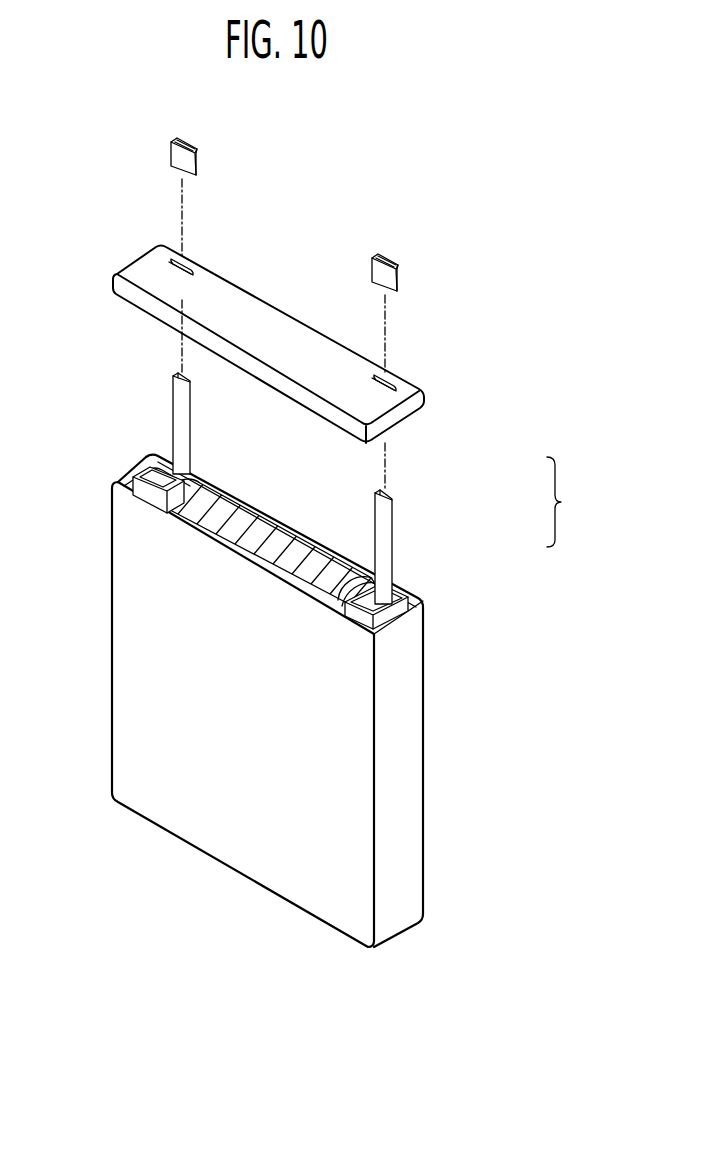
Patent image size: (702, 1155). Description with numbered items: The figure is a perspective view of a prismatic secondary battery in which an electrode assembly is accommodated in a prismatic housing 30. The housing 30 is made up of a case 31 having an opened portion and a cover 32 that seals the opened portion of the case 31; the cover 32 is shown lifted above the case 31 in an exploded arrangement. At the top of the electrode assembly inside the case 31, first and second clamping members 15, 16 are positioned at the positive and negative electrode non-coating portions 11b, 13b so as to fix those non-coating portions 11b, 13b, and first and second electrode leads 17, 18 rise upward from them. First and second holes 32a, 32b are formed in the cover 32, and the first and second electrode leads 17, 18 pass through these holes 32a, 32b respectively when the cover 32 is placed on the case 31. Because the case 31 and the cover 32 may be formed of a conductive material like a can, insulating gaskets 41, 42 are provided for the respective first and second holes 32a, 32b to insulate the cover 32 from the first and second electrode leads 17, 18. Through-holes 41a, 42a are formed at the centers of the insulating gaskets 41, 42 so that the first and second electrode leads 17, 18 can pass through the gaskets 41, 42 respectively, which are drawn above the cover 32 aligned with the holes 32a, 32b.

The positive electrode non-coating portion 11b is at (131, 480).
The negative electrode non-coating portion 13b is at (369, 597).
The first clamping member 15 is at (132, 495).
The second clamping member 16 is at (358, 620).
The first electrode lead 17 is at (176, 415).
The second electrode lead 18 is at (386, 537).
The prismatic housing 30 is at (566, 502).
The case 31 is at (417, 632).
The cover 32 is at (418, 410).
The first hole 32a is at (188, 268).
The second hole 32b is at (388, 386).
The insulating gasket 41 is at (372, 277).
The through-hole 41a is at (377, 257).
The insulating gasket 42 is at (170, 160).
The through-hole 42a is at (170, 142).